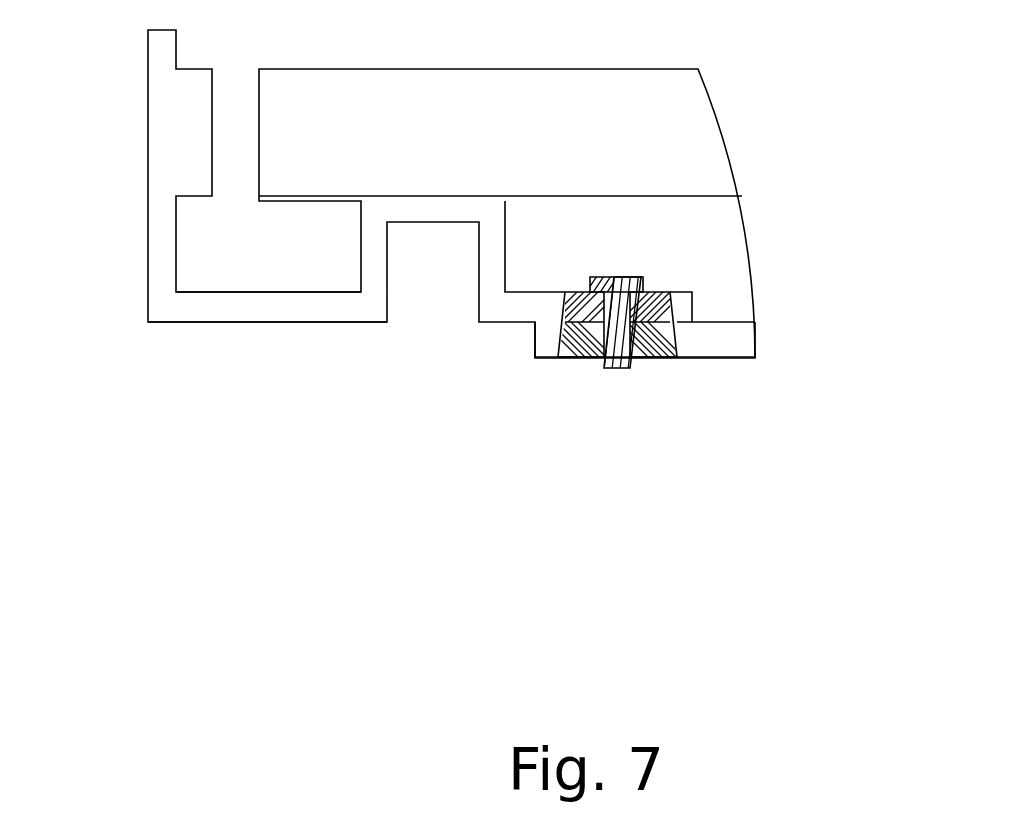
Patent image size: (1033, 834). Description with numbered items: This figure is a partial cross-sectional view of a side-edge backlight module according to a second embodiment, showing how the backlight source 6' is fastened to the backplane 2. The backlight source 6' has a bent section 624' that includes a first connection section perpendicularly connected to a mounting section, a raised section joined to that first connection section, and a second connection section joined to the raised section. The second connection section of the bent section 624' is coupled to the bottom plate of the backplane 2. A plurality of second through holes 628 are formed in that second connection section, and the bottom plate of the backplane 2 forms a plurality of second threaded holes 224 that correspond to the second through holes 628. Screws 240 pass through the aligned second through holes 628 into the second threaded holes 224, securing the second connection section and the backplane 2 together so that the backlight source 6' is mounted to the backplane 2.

The backlight source 6' is at (394, 194).
The bent section 624' is at (267, 404).
The backplane 2 is at (807, 346).
The second threaded holes 224 is at (597, 352).
The second through holes 628 is at (653, 353).
The screws 240 is at (618, 325).